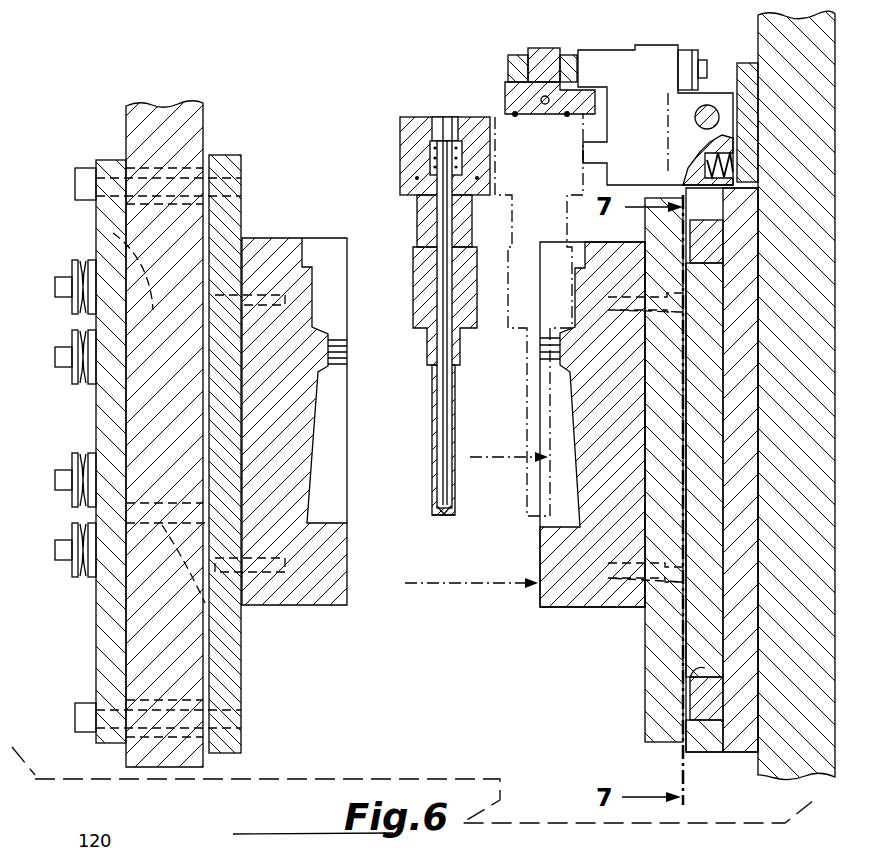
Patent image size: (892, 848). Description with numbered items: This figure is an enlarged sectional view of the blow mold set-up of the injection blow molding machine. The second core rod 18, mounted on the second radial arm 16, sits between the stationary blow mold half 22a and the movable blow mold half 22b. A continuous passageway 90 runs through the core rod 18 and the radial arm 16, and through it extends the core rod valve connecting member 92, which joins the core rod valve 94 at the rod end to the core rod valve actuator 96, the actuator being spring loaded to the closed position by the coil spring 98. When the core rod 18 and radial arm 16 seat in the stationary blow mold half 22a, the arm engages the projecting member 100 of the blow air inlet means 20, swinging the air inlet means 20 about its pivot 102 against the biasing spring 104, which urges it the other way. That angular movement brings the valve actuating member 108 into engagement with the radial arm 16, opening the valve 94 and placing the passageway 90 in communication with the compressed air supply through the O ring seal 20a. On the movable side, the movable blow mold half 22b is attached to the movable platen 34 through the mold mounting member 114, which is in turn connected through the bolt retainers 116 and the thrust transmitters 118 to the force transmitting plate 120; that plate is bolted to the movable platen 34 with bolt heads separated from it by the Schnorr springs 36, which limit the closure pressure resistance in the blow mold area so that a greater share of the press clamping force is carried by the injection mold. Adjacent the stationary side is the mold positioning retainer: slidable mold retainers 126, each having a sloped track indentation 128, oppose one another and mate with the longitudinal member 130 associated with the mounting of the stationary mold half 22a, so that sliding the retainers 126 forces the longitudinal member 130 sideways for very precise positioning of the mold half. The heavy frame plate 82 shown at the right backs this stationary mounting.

The second radial arm 16 is at (412, 147).
The second core rod 18 is at (432, 420).
The blow air inlet means 20 is at (653, 60).
The O ring seal 20a is at (503, 95).
The stationary blow mold half 22a is at (573, 588).
The movable blow mold half 22b is at (318, 578).
The movable platen 34 is at (190, 112).
The Schnorr springs 36 is at (82, 455).
The frame plate 82 is at (773, 32).
The continuous passageway 90 is at (437, 196).
The core rod valve connecting member 92 is at (443, 284).
The core rod valve 94 is at (445, 518).
The core rod valve actuator 96 is at (452, 118).
The coil spring 98 is at (457, 152).
The projecting member 100 is at (583, 152).
The pivot 102 is at (707, 104).
The biasing spring 104 is at (697, 150).
The valve actuating member 108 is at (542, 105).
The mold mounting member 114 is at (227, 677).
The bolt retainers 116 is at (85, 168).
The thrust transmitters 118 is at (99, 233).
The force transmitting plate 120 is at (107, 604).
The mold retainers 126 is at (712, 236).
The sloped track indentations 128 is at (705, 263).
The longitudinal member 130 is at (703, 638).